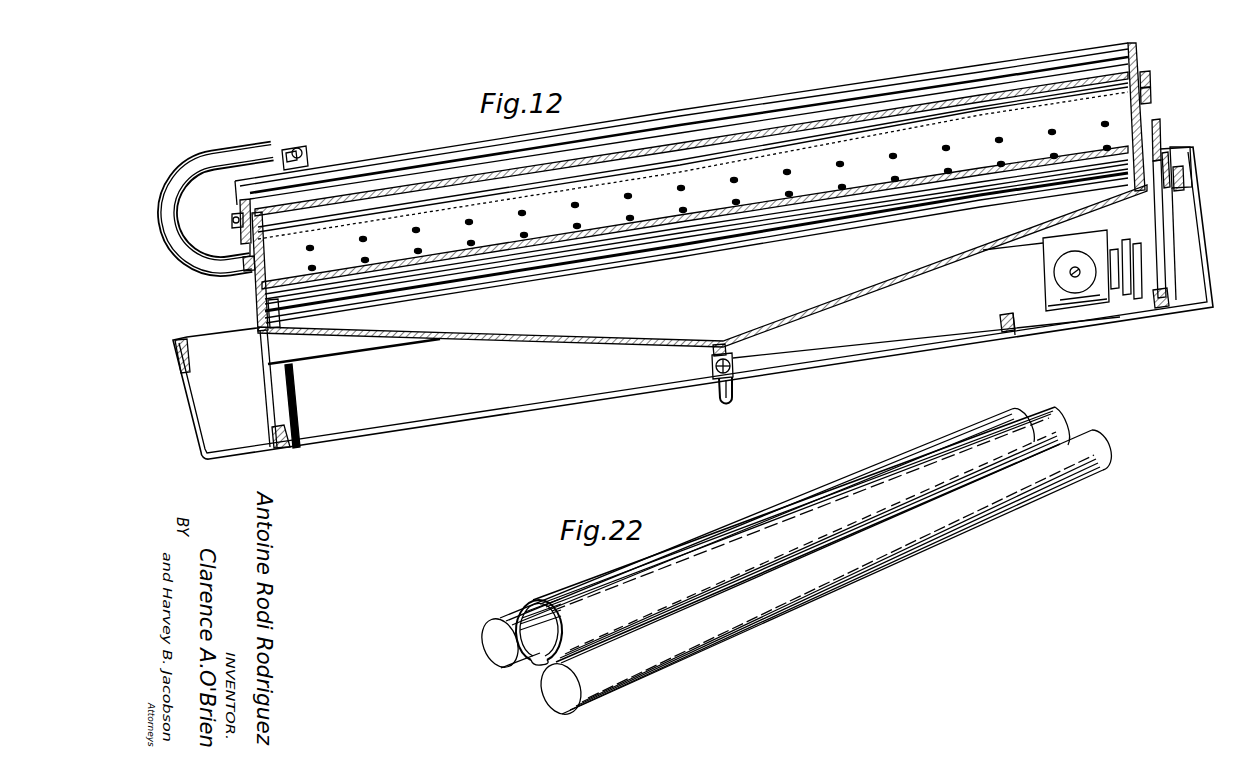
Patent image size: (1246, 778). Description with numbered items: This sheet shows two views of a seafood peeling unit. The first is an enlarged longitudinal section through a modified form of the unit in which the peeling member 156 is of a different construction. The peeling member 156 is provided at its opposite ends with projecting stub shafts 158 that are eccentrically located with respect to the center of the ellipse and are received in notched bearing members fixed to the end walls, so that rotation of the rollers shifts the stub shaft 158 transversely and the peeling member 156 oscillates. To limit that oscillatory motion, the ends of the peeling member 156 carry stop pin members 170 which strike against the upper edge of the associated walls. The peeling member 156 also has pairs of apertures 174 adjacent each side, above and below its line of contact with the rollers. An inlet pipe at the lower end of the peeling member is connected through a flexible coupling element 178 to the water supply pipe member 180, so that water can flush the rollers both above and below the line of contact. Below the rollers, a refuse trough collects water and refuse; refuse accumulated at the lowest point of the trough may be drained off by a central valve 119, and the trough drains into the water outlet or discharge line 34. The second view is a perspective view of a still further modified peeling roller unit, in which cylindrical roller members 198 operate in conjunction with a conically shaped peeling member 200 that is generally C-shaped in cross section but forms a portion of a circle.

In FIG. 12, the water outlet or discharge line 34 is at (735, 387).
In FIG. 12, the central valve 119 is at (733, 352).
In FIG. 12, the peeling member 156 is at (731, 140).
In FIG. 12, the stub shaft 158 is at (236, 230).
In FIG. 12, the stop pin member 170 is at (251, 263).
In FIG. 12, the apertures 174 is at (682, 210).
In FIG. 12, the flexible coupling element 178 is at (184, 244).
In FIG. 12, the water supply pipe member 180 is at (307, 147).
In FIG. 22, the cylindrical roller members 198 is at (498, 640).
In FIG. 22, the conically shaped peeling member 200 is at (731, 542).